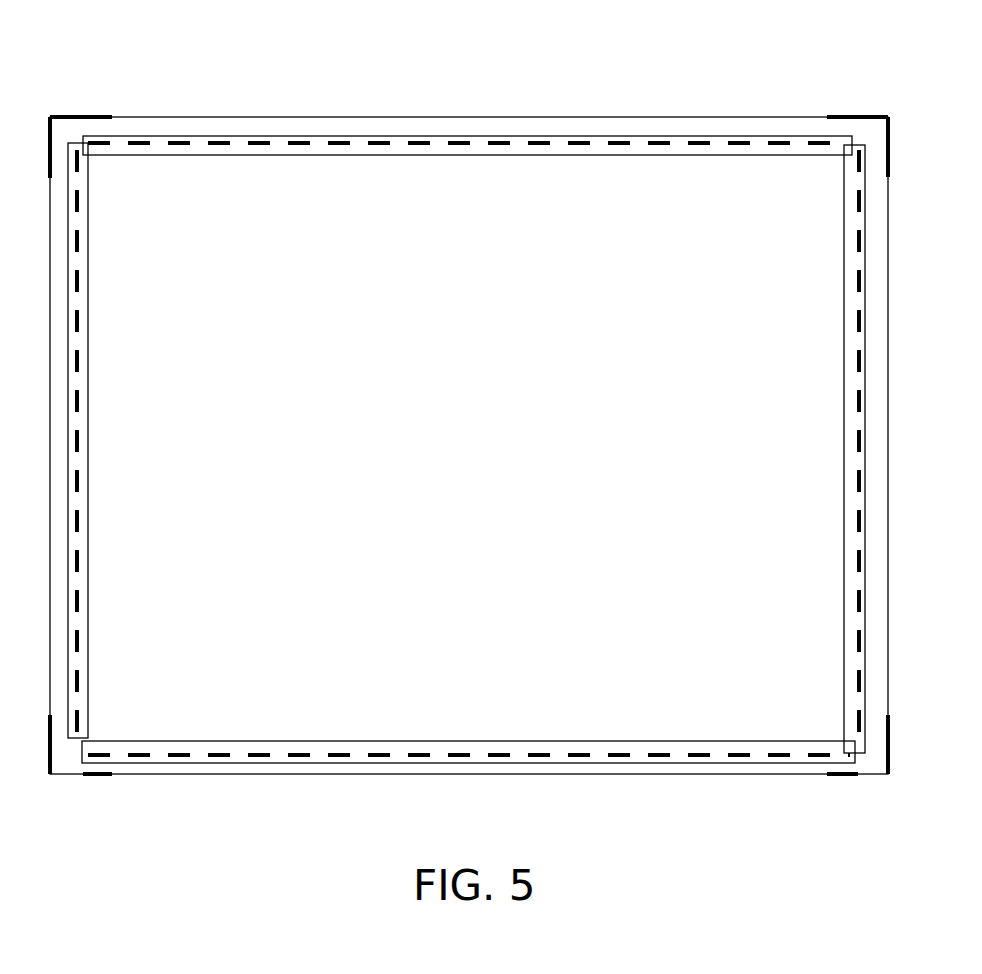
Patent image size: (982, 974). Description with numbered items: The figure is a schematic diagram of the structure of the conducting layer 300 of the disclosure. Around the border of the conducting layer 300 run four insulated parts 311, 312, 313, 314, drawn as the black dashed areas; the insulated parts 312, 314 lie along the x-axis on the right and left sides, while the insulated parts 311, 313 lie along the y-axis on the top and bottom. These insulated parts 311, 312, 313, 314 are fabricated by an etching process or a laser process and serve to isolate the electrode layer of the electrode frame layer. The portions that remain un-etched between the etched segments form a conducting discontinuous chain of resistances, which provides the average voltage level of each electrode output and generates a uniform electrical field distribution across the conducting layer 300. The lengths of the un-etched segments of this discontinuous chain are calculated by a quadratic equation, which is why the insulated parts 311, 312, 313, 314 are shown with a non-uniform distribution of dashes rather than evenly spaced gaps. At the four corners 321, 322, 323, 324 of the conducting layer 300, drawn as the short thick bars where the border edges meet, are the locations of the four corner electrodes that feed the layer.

The conducting layer 300 is at (510, 84).
The insulated part 311 is at (495, 156).
The insulated part 312 is at (844, 460).
The insulated part 313 is at (493, 741).
The insulated part 314 is at (88, 385).
The corner 321 is at (85, 117).
The corner 322 is at (845, 117).
The corner 323 is at (838, 775).
The corner 324 is at (73, 775).